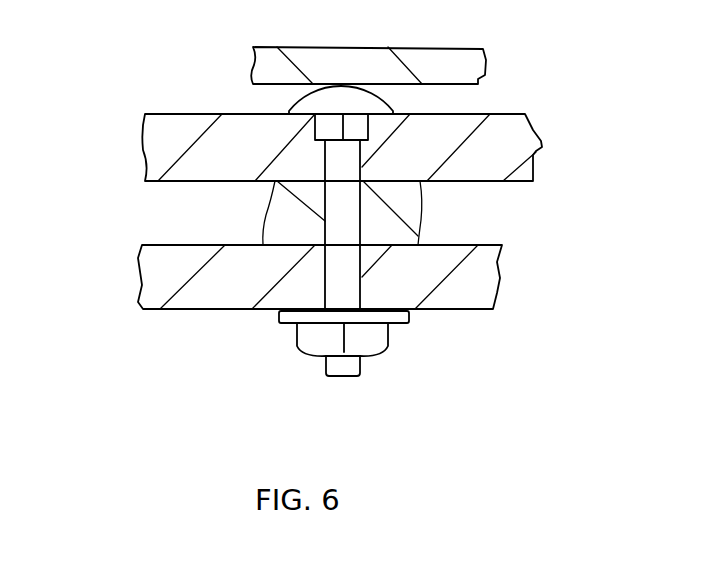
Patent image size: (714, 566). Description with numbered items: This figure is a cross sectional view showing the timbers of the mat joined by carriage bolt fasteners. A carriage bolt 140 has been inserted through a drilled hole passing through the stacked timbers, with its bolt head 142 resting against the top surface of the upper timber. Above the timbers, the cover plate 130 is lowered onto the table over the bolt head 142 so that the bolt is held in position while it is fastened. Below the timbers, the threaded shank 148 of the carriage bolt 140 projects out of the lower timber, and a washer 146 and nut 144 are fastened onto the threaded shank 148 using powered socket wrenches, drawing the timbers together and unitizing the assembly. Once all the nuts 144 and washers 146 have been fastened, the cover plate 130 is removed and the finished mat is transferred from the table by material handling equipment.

The cover plate 130 is at (437, 60).
The carriage bolt 140 is at (289, 111).
The bolt head 142 is at (373, 105).
The nut 144 is at (367, 338).
The washer 146 is at (402, 317).
The threaded shank 148 is at (345, 206).